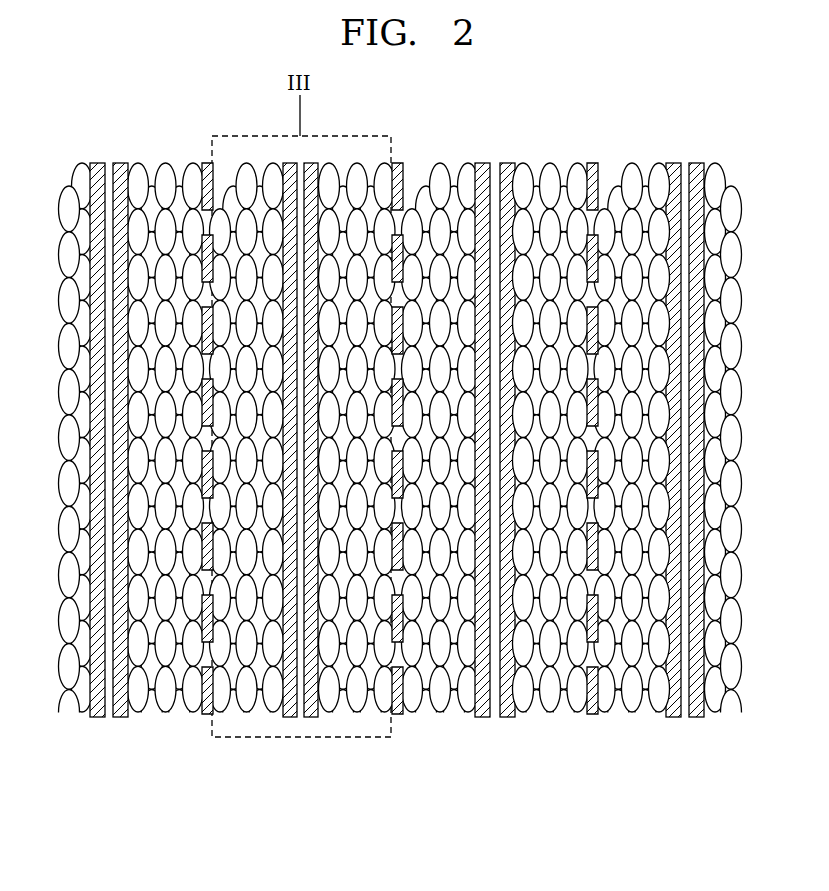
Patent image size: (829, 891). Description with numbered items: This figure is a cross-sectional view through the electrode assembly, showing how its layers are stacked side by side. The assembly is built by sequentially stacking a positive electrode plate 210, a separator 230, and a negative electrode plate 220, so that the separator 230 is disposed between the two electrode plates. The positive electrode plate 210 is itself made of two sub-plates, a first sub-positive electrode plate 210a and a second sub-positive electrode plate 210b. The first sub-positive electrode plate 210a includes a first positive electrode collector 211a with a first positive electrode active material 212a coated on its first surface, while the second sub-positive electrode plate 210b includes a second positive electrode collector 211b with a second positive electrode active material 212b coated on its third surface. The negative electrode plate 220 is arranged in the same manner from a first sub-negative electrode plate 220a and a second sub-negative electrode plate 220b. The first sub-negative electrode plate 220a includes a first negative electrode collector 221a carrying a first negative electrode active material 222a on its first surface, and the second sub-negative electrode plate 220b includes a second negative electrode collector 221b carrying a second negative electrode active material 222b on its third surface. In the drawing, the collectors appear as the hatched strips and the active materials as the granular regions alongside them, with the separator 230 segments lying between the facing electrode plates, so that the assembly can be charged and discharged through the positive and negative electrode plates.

The positive electrode plate 210 is at (440, 515).
The first sub-positive electrode plate 210a is at (405, 496).
The second sub-positive electrode plate 210b is at (519, 496).
The first positive electrode collector 211a is at (283, 717).
The second positive electrode collector 211b is at (305, 717).
The first positive electrode active material 212a is at (247, 700).
The second positive electrode active material 212b is at (352, 700).
The negative electrode plate 220 is at (355, 512).
The first sub-negative electrode plate 220a is at (267, 496).
The second sub-negative electrode plate 220b is at (389, 496).
The first negative electrode collector 221a is at (482, 717).
The second negative electrode collector 221b is at (507, 717).
The first negative electrode active material 222a is at (437, 697).
The second negative electrode active material 222b is at (547, 697).
The separator 230 is at (208, 163).